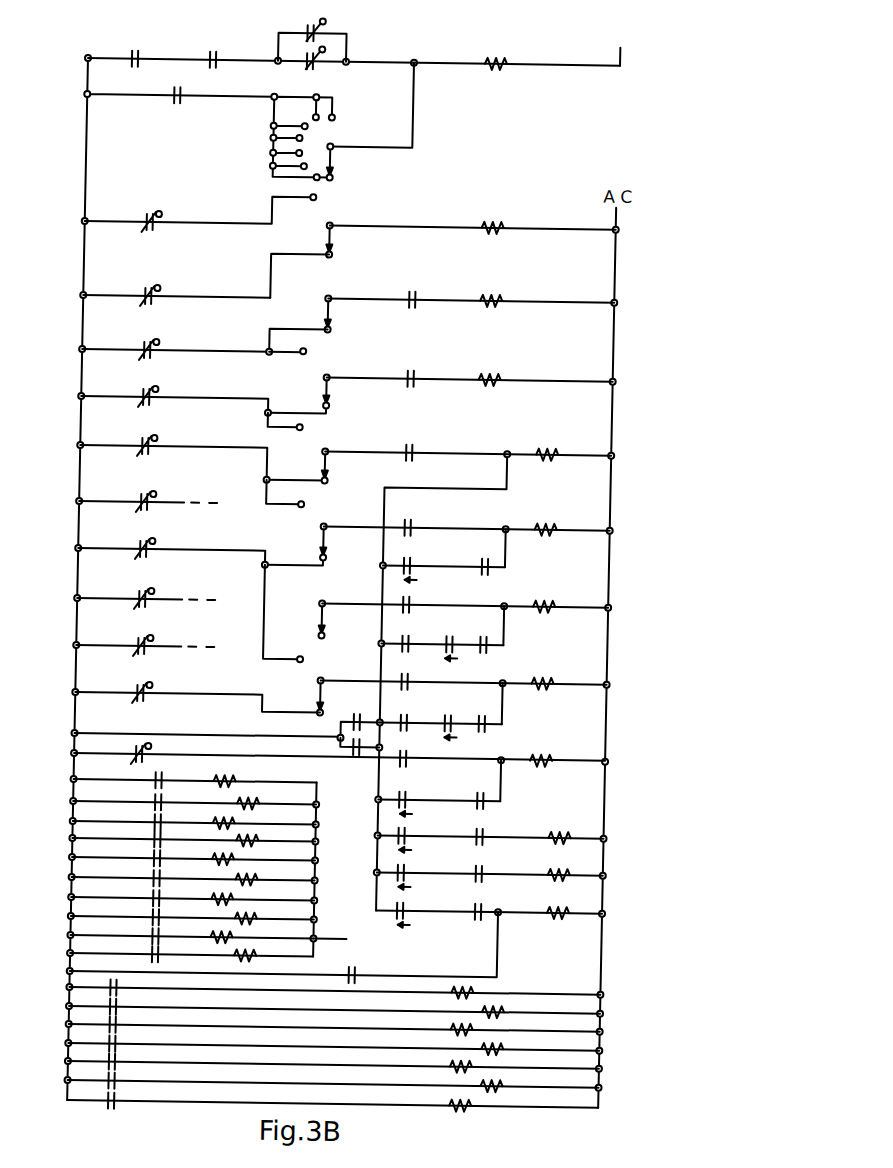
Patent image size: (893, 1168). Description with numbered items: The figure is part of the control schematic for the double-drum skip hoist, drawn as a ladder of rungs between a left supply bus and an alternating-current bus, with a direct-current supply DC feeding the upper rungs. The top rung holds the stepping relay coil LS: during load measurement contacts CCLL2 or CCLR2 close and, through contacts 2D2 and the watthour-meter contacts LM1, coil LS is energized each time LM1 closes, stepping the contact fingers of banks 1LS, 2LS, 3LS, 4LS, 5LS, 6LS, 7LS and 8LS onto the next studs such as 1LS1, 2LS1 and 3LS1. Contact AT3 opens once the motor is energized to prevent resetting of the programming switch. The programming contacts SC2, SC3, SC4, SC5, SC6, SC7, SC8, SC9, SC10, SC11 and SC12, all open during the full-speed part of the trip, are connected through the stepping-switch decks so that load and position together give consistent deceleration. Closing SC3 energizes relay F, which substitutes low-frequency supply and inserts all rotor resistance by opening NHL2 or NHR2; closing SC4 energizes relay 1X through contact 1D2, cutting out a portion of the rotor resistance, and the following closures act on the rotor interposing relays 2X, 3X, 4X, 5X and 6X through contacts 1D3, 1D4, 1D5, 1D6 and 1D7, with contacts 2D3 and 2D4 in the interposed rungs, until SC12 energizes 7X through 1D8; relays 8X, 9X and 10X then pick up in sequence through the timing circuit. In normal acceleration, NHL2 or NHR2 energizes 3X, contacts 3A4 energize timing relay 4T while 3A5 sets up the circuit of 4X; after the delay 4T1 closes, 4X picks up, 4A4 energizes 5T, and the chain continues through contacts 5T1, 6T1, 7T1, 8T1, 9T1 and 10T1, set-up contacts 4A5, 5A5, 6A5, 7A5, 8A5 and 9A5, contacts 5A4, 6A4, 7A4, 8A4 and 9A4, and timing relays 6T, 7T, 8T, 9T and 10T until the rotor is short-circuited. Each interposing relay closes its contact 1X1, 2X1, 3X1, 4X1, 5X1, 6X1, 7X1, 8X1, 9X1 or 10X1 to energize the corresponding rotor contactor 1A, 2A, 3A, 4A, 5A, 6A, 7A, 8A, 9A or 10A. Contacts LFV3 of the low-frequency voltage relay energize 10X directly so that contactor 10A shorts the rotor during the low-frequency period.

The contacts 2D2 is at (140, 53).
The watthour meter contacts LM1 is at (175, 128).
The contacts CCLL2 is at (326, 28).
The contacts CCLR2 is at (304, 68).
The stepping relay coil LS is at (509, 80).
The DC supply terminal DC is at (484, 494).
The instantaneous contact AT3 is at (158, 105).
The stepping switch bank 1LS is at (342, 121).
The stepping switch contact 1LS1 is at (336, 174).
The contacts SC2 is at (201, 212).
The contacts SC3 is at (177, 286).
The contacts SC4 is at (177, 340).
The contacts SC5 is at (176, 390).
The contacts SC6 is at (175, 448).
The contacts SC7 is at (148, 491).
The contacts SC8 is at (173, 542).
The contacts SC9 is at (146, 588).
The contacts SC10 is at (145, 635).
The contacts SC11 is at (198, 687).
The contacts SC12 is at (164, 745).
The stepping switch bank 2LS is at (471, 229).
The stepping switch contact 2LS1 is at (336, 251).
The stepping switch bank 3LS is at (462, 300).
The stepping switch contact 3LS1 is at (336, 326).
The stepping switch bank 4LS is at (440, 380).
The stepping switch bank 5LS is at (439, 450).
The stepping switch bank 6LS is at (438, 525).
The stepping switch bank 7LS is at (457, 610).
The stepping switch bank 8LS is at (435, 642).
The relay F is at (501, 218).
The relay 1X is at (504, 293).
The relay coil 2X is at (504, 372).
The rotor interposing relay 3X is at (558, 445).
The rotor interposing relay 4X is at (558, 523).
The relay coil 5X is at (558, 601).
The relay coil 6X is at (558, 678).
The relay 7X is at (558, 755).
The relay 8X is at (576, 831).
The relay 9X is at (576, 868).
The rotor interposing relay 10X is at (576, 906).
The contacts 1D2 is at (419, 294).
The contact 1D3 is at (419, 373).
The contact 1D4 is at (419, 445).
The contact 1D5 is at (417, 521).
The contact 1D6 is at (417, 600).
The contact 1D7 is at (410, 676).
The contact 1D8 is at (410, 753).
The contact 2D3 is at (442, 636).
The contact 2D4 is at (441, 713).
The timing relay contacts 4T1 is at (444, 562).
The contact 5T1 is at (456, 647).
The contact 6T1 is at (456, 726).
The contact 7T1 is at (439, 794).
The contact 8T1 is at (490, 832).
The contact 9T1 is at (489, 869).
The contact 10T1 is at (489, 907).
The contacts 3A5 is at (495, 569).
The contact 4A5 is at (490, 635).
The contact 5A5 is at (490, 713).
The contact 6A5 is at (491, 791).
The contact 7A5 is at (497, 829).
The contact 8A5 is at (497, 866).
The contact 9A5 is at (497, 905).
The contacts NHL2 is at (366, 710).
The contacts NHR2 is at (330, 748).
The instantaneous contacts LFV3 is at (375, 967).
The contact 1X1 is at (160, 782).
The contact 2X1 is at (160, 804).
The contact 3X1 is at (160, 824).
The contact 4X1 is at (160, 841).
The contact 5X1 is at (160, 860).
The contact 6X1 is at (160, 880).
The contact 7X1 is at (160, 900).
The contact 8X1 is at (160, 919).
The contact 9X1 is at (160, 938).
The contact 10X1 is at (160, 956).
The relay coil 1A is at (250, 779).
The relay coil 2A is at (274, 801).
The rotor contactor 3A is at (250, 821).
The rotor contactor 4A is at (274, 838).
The relay coil 5A is at (250, 857).
The relay coil 6A is at (274, 877).
The relay coil 7A is at (250, 897).
The relay coil 8A is at (274, 916).
The relay coil 9A is at (250, 935).
The rotor contactor 10A is at (274, 953).
The contacts 3A4 is at (135, 995).
The contacts 4A4 is at (135, 1014).
The contact 5A4 is at (135, 1032).
The contact 6A4 is at (135, 1051).
The contact 7A4 is at (135, 1069).
The contact 8A4 is at (135, 1088).
The contact 9A4 is at (135, 1108).
The timing relay 4T is at (471, 990).
The timing relay 5T is at (524, 1004).
The relay coil 6T is at (471, 1027).
The relay coil 7T is at (524, 1041).
The relay coil 8T is at (471, 1064).
The relay coil 9T is at (524, 1078).
The relay coil 10T is at (471, 1103).